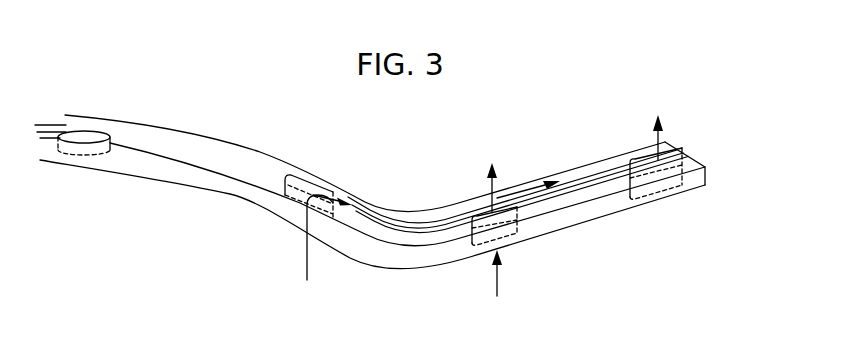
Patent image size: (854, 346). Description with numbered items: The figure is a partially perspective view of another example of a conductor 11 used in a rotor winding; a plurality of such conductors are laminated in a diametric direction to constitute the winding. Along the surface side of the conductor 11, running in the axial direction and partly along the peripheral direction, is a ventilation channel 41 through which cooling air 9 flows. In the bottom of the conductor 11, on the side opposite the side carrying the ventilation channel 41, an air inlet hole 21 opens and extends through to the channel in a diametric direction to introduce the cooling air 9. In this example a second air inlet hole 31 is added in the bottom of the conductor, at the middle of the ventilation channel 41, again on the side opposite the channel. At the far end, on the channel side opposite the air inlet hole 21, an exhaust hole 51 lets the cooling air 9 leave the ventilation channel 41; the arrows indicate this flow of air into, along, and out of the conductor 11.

The cooling air 9 is at (307, 250).
The conductor 11 is at (705, 178).
The air inlet hole 21 is at (310, 173).
The second air inlet hole 31 is at (517, 240).
The ventilation channel 41 is at (562, 180).
The exhaust hole 51 is at (645, 162).